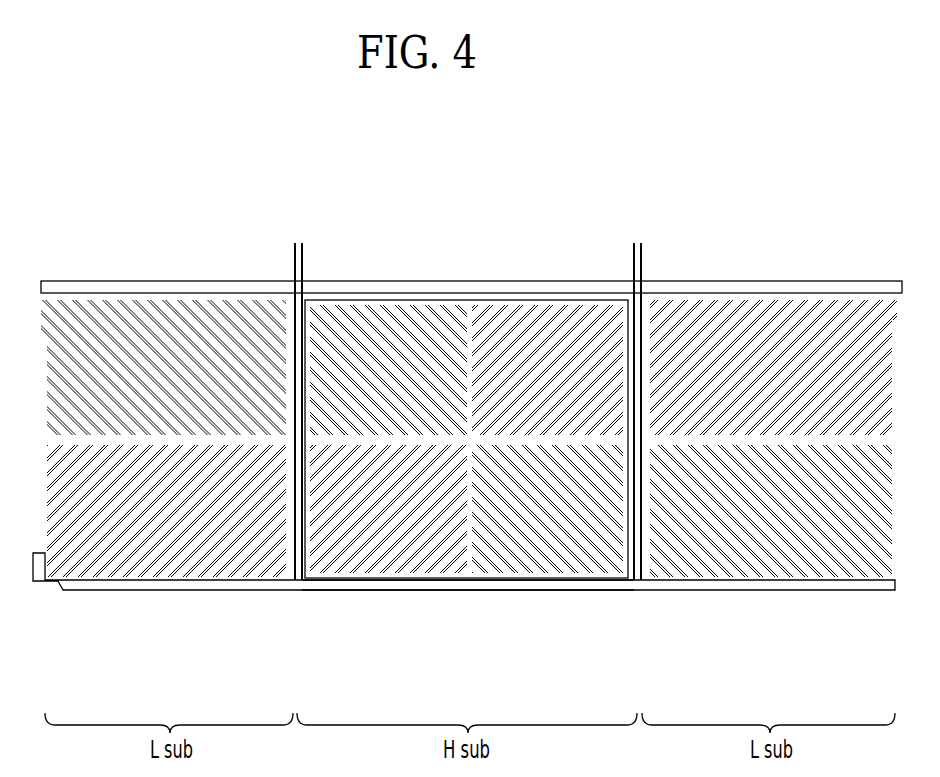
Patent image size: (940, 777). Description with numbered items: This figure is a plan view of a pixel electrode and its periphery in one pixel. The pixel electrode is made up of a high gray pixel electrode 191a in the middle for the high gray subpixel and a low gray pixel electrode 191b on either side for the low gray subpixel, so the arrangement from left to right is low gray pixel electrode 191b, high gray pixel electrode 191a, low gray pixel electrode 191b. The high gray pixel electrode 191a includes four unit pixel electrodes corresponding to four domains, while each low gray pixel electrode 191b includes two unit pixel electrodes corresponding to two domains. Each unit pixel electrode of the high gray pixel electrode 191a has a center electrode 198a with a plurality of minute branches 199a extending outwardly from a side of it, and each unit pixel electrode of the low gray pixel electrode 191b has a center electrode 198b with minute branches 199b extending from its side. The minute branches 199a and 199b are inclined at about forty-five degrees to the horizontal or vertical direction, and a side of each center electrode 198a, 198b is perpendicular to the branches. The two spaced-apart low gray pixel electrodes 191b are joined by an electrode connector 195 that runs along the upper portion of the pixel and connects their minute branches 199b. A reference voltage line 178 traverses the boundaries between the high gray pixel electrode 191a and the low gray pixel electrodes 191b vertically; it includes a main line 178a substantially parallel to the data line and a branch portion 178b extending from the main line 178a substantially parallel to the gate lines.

The electrode connector 195 is at (386, 281).
The reference voltage line 178 is at (459, 473).
The main line 178a is at (296, 552).
The branch portion 178b is at (347, 590).
The high gray pixel electrode 191a is at (415, 578).
The low gray pixel electrode 191b is at (173, 579).
The center electrode 198a is at (470, 553).
The center electrode 198b is at (287, 527).
The minute branches 199a is at (517, 560).
The minute branches 199b is at (698, 562).